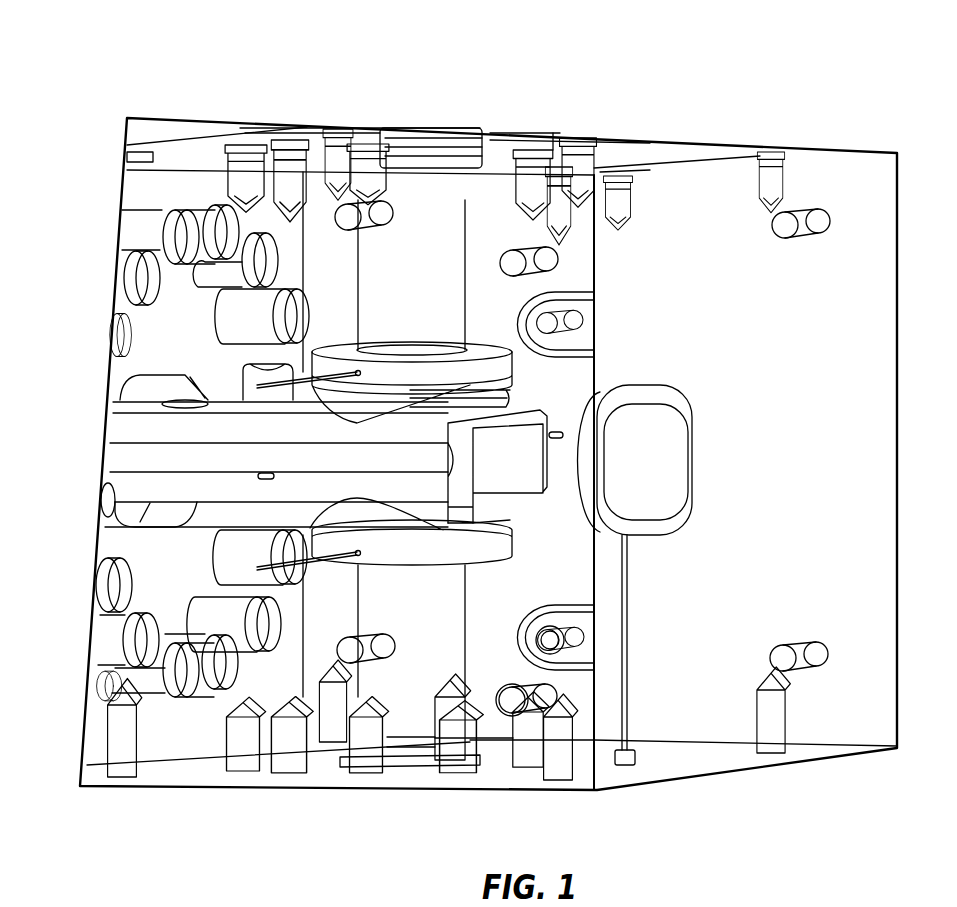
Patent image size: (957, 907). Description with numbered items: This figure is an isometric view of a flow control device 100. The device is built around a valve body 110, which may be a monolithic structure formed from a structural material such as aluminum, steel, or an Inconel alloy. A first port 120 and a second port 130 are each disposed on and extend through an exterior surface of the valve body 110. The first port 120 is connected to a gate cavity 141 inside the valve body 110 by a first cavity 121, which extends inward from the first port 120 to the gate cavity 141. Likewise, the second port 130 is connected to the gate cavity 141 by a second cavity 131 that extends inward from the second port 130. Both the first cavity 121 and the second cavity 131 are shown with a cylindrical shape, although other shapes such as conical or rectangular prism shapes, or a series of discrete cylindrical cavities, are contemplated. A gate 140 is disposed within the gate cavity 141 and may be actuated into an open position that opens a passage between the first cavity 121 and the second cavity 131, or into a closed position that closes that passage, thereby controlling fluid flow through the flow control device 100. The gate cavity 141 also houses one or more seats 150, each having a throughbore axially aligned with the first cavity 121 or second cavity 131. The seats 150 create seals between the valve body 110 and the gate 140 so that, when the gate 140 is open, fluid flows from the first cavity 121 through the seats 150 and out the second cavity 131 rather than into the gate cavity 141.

The flow control device 100 is at (257, 72).
The valve body 110 is at (704, 232).
The first port 120 is at (414, 148).
The first cavity 121 is at (436, 243).
The second port 130 is at (401, 766).
The second cavity 131 is at (394, 670).
The gate 140 is at (148, 430).
The gate cavity 141 is at (663, 442).
The seats 150 is at (522, 370).